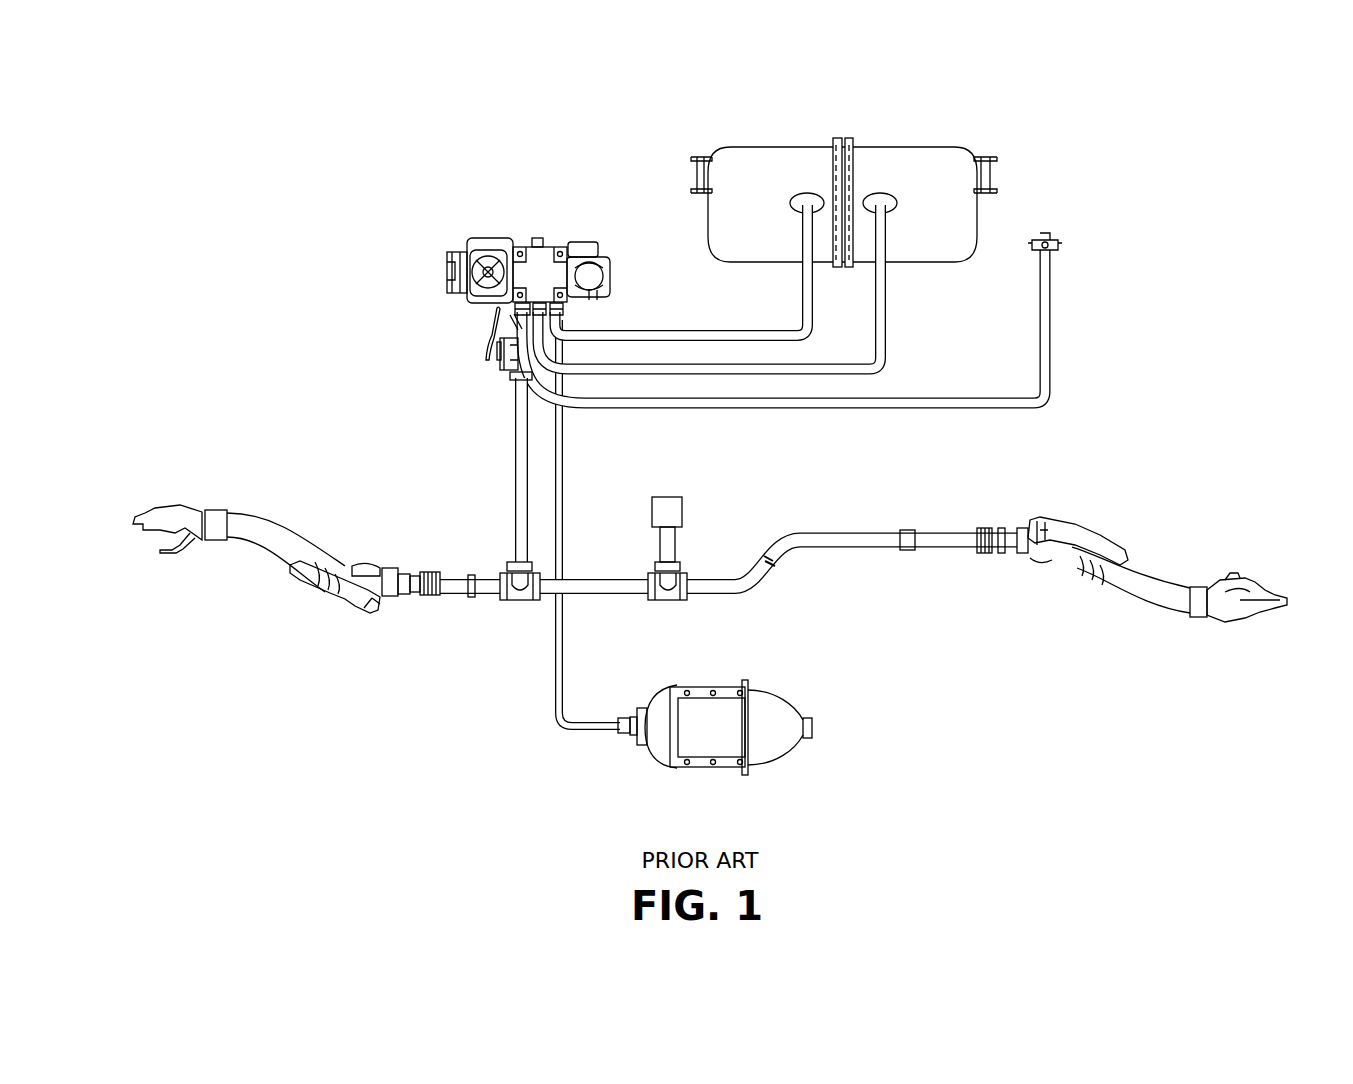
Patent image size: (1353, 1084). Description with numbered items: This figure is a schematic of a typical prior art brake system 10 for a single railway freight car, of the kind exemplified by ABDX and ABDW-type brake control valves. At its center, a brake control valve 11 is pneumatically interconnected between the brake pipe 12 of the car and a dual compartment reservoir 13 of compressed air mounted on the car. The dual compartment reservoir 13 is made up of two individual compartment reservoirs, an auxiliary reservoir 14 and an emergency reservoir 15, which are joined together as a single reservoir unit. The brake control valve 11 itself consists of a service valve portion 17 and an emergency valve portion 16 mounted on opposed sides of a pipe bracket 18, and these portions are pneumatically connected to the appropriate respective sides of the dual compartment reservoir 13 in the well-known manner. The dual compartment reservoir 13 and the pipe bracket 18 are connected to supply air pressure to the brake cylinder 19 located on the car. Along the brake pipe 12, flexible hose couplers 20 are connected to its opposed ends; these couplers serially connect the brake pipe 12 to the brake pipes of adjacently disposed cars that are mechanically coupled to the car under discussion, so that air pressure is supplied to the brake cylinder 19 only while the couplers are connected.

The brake system 10 is at (645, 236).
The brake control valve 11 is at (472, 322).
The brake pipe 12 is at (605, 584).
The dual compartment reservoir 13 is at (867, 176).
The auxiliary reservoir 14 is at (915, 220).
The emergency reservoir 15 is at (739, 220).
The emergency valve portion 16 is at (612, 286).
The service valve portion 17 is at (497, 238).
The pipe bracket 18 is at (527, 283).
The brake cylinder 19 is at (767, 712).
The flexible hose coupler 20 is at (258, 523).